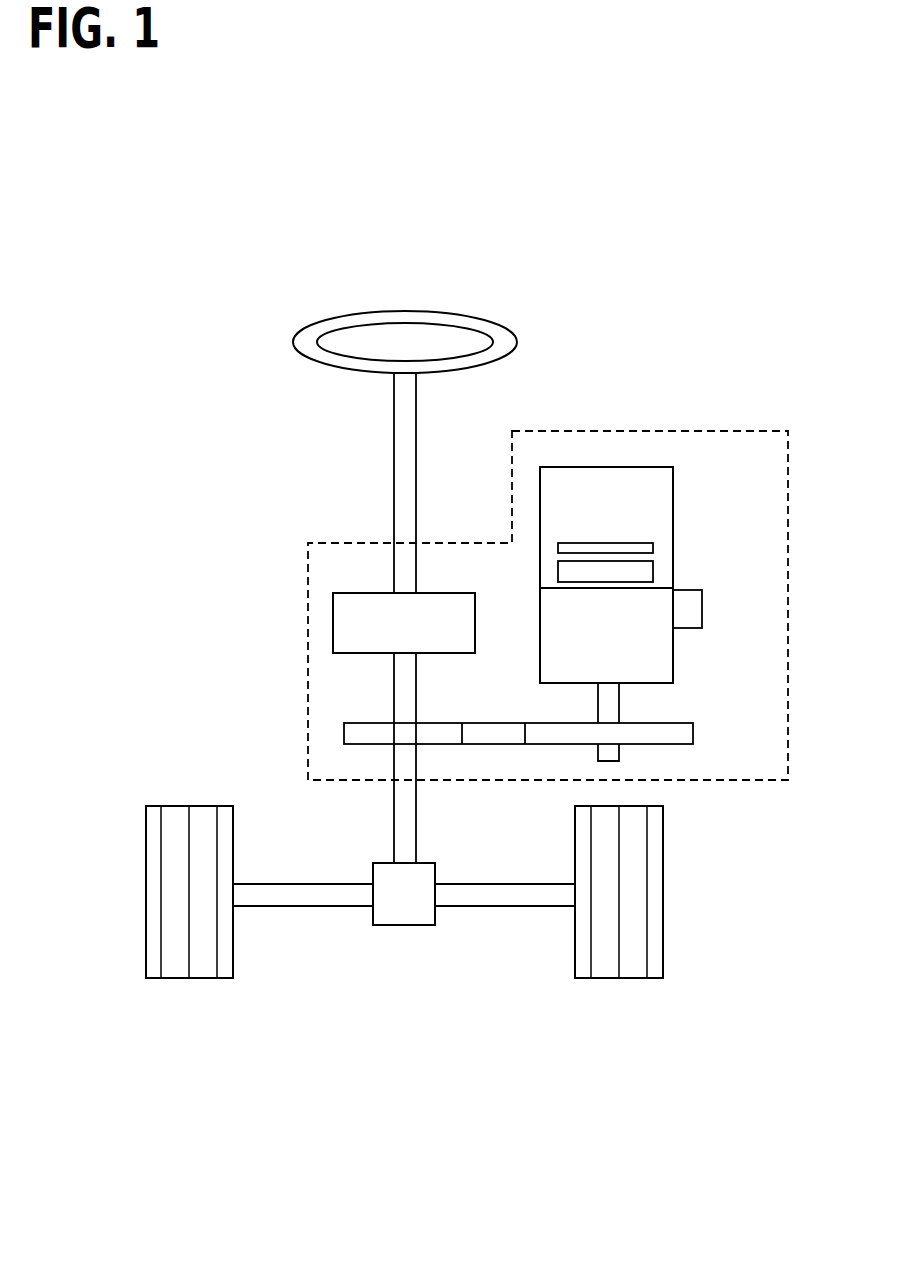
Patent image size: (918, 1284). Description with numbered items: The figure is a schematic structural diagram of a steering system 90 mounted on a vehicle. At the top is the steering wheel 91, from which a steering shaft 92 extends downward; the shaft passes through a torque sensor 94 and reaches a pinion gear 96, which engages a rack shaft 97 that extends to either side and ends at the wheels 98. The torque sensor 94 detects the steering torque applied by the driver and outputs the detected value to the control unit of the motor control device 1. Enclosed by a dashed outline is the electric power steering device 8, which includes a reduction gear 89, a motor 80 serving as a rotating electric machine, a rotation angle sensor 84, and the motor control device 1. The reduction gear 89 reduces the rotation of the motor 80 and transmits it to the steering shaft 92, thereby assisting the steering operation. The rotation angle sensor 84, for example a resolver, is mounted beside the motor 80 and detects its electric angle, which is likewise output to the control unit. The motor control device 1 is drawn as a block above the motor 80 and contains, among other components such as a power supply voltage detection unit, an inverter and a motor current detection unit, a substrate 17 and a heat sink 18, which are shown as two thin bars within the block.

The motor control device 1 is at (673, 482).
The electric power steering device 8 is at (722, 431).
The substrate 17 is at (653, 550).
The heat sink 18 is at (653, 572).
The motor 80 is at (673, 668).
The rotation angle sensor 84 is at (702, 610).
The reduction gear 89 is at (693, 731).
The steering system 90 is at (364, 1058).
The steering wheel 91 is at (293, 345).
The steering shaft 92 is at (394, 434).
The torque sensor 94 is at (333, 612).
The pinion gear 96 is at (396, 925).
The rack shaft 97 is at (297, 906).
The wheels 98 is at (208, 978).